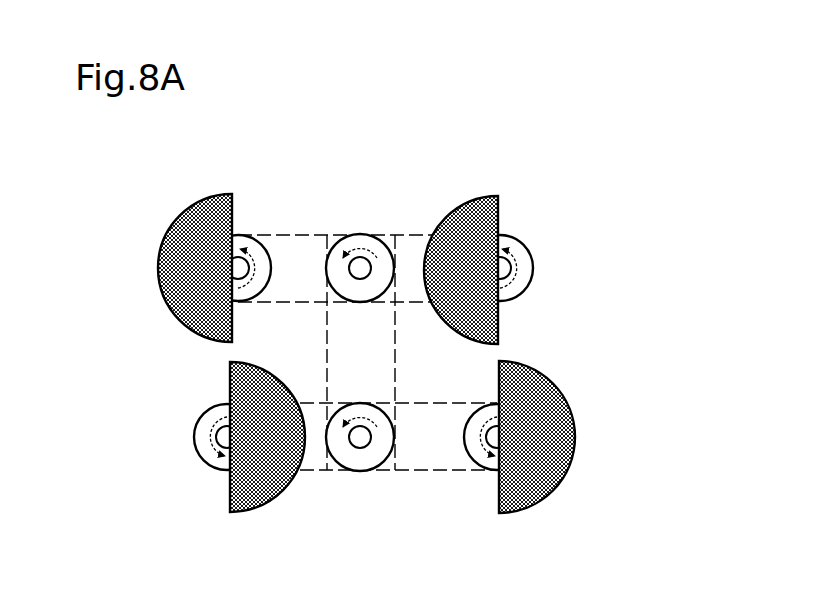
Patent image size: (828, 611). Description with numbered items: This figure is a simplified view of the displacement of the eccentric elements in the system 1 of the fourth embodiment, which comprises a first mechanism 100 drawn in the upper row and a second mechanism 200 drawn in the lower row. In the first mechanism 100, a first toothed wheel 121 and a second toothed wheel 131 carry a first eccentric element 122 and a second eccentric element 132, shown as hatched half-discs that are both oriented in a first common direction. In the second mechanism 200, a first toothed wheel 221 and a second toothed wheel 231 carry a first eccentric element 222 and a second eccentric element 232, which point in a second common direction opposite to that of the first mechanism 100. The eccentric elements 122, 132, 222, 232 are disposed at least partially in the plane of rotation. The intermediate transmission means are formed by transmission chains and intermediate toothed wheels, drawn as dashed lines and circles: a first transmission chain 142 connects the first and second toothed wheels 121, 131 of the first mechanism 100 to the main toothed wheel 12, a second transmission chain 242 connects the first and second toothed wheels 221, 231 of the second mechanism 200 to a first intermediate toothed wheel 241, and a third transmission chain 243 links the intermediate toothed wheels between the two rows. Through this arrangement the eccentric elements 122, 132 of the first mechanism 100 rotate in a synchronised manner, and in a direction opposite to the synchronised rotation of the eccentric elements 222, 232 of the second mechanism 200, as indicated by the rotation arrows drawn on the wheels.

The system 1 is at (161, 357).
The first mechanism 100 is at (564, 259).
The second mechanism 200 is at (585, 399).
The main toothed wheel 12 is at (371, 242).
The first toothed wheel 121 is at (240, 243).
The first eccentric element 122 is at (198, 258).
The second toothed wheel 131 is at (510, 247).
The second eccentric element 132 is at (462, 257).
The first transmission chain 142 is at (318, 235).
The first toothed wheel 221 is at (207, 447).
The first eccentric element 222 is at (279, 465).
The second toothed wheel 231 is at (490, 471).
The second eccentric element 232 is at (533, 465).
The first intermediate toothed wheel 241 is at (356, 455).
The second transmission chain 242 is at (406, 471).
The third transmission chain 243 is at (396, 357).